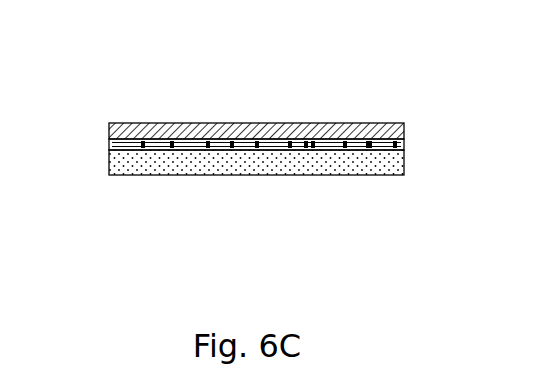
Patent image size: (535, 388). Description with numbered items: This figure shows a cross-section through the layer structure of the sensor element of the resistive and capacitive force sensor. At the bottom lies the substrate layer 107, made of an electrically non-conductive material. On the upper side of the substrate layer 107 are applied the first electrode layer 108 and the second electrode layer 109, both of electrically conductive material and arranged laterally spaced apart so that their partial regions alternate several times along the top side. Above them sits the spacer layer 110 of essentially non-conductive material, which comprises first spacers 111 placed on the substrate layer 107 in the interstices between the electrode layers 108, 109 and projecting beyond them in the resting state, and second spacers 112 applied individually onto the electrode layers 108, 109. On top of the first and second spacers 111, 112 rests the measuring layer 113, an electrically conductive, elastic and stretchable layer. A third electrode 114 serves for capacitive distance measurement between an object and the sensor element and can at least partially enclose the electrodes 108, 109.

The substrate layer 107 is at (404, 169).
The first electrode layer 108 is at (143, 142).
The second electrode layer 109 is at (257, 83).
The spacer layer 110 is at (108, 141).
The first spacers 111 is at (172, 143).
The second spacers 112 is at (340, 91).
The measuring layer 113 is at (404, 130).
The third electrode 114 is at (404, 147).